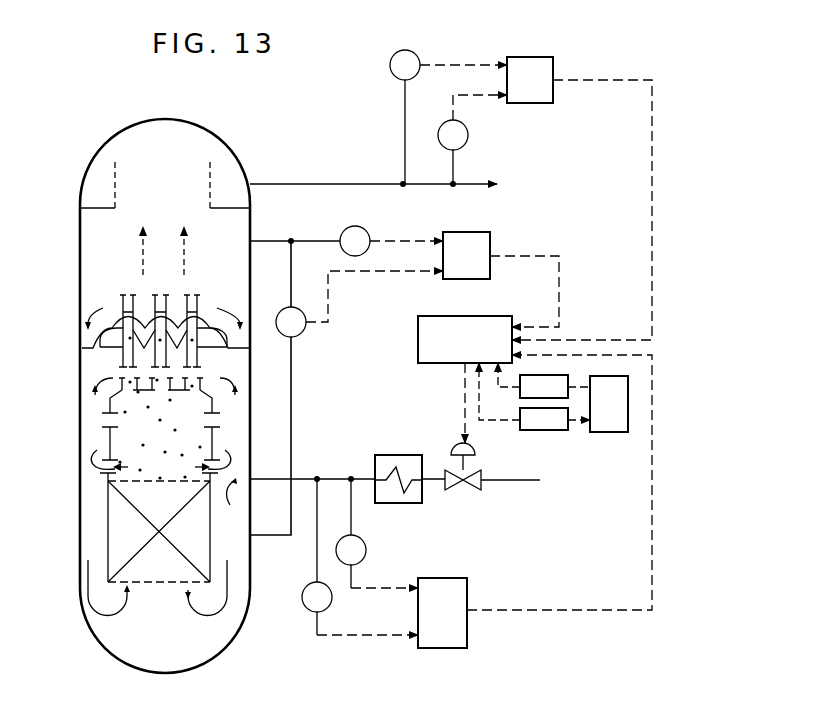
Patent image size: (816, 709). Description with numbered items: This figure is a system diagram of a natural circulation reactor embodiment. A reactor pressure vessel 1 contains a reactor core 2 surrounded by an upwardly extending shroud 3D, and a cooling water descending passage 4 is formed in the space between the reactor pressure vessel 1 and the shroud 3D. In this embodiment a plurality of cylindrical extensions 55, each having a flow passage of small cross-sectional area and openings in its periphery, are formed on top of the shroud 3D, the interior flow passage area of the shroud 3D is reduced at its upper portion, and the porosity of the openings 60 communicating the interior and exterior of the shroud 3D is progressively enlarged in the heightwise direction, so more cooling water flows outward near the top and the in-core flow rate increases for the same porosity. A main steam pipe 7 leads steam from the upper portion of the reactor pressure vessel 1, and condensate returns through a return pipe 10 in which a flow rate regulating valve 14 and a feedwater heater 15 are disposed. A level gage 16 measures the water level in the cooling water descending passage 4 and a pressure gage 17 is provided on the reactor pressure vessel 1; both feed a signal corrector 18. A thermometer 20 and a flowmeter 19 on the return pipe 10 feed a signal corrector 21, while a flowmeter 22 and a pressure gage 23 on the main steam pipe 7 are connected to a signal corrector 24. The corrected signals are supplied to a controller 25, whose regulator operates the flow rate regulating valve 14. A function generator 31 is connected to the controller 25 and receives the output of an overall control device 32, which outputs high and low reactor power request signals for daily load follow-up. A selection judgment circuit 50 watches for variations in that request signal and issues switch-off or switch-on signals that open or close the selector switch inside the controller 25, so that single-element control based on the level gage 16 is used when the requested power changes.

The reactor pressure vessel 1 is at (105, 150).
The reactor core 2 is at (118, 527).
The shroud 3D is at (108, 440).
The cooling water descending passage 4 is at (80, 548).
The main steam pipe 7 is at (296, 184).
The return pipe 10 is at (300, 479).
The flow rate regulating valve 14 is at (463, 490).
The feedwater heater 15 is at (396, 455).
The level gage 16 is at (300, 334).
The pressure gage 17 is at (348, 229).
The signal corrector 18 is at (490, 240).
The flowmeter 19 is at (366, 550).
The thermometer 20 is at (302, 598).
The signal corrector 21 is at (467, 586).
The flowmeter 22 is at (468, 137).
The pressure gage 23 is at (390, 65).
The signal corrector 24 is at (540, 103).
The controller 25 is at (418, 338).
The function generator 31 is at (540, 430).
The overall control device 32 is at (612, 432).
The selection judgment circuit 50 is at (560, 375).
The cylindrical extensions 55 is at (200, 300).
The openings 60 is at (108, 423).